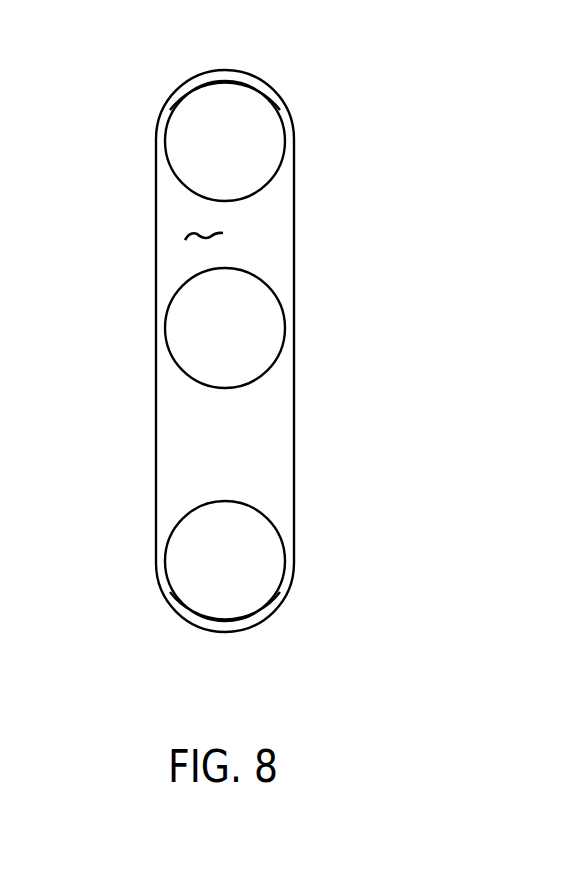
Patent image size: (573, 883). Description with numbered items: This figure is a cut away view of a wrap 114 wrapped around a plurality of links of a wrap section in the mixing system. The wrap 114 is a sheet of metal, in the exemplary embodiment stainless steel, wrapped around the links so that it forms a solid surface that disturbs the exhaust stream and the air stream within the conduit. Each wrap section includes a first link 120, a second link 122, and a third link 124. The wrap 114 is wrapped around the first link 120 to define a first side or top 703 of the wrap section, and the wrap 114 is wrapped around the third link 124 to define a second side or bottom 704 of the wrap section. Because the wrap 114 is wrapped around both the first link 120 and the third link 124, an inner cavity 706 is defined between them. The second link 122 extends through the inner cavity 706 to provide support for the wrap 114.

The body / housing 114 is at (348, 348).
The first circular opening 120 is at (285, 163).
The second circular opening 122 is at (283, 297).
The third circular opening 124 is at (283, 528).
The top rounded end 703 is at (225, 67).
The bottom rounded end 704 is at (227, 635).
The surface mark 706 is at (184, 238).